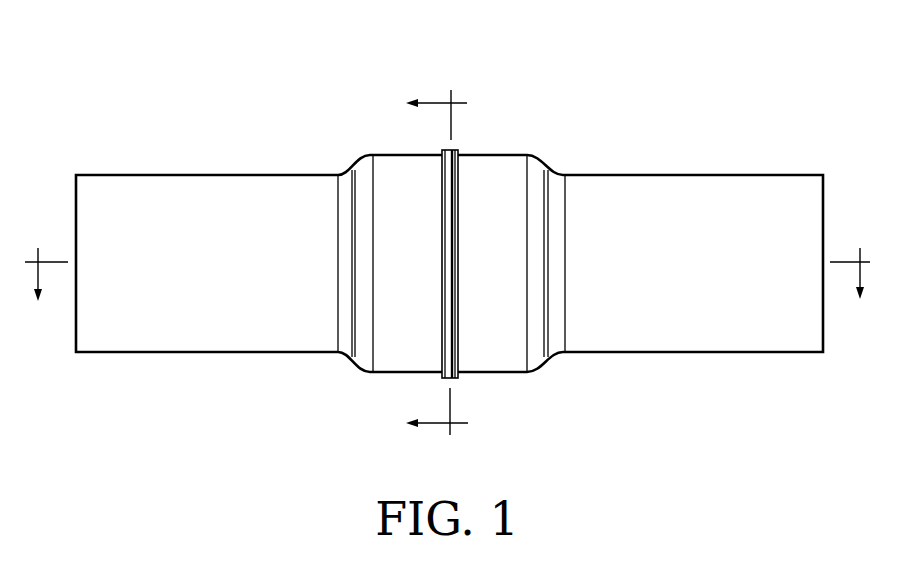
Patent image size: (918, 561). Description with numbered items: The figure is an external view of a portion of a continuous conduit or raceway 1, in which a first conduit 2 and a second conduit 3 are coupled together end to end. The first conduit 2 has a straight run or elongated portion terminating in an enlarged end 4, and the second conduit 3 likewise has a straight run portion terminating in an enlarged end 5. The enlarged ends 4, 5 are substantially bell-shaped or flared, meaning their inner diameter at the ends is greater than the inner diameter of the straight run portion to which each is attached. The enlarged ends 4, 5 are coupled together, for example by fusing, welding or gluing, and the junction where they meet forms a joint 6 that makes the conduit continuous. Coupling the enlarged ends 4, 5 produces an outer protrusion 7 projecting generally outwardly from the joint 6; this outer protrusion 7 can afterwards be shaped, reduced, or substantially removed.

The continuous conduit 1 is at (619, 98).
The first conduit 2 is at (180, 197).
The second conduit 3 is at (705, 200).
The enlarged end 4 is at (360, 163).
The enlarged end 5 is at (540, 188).
The joint 6 is at (453, 178).
The outer protrusion 7 is at (444, 153).